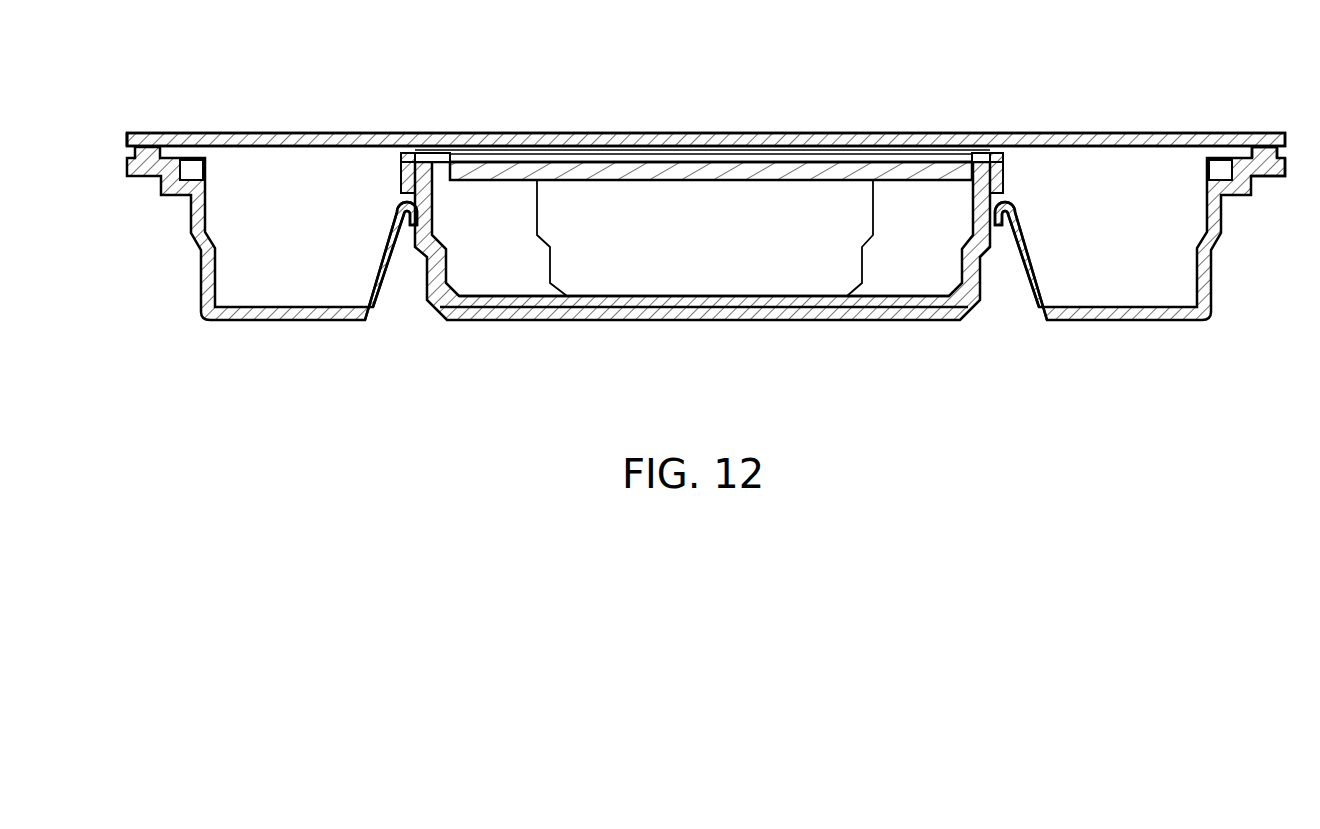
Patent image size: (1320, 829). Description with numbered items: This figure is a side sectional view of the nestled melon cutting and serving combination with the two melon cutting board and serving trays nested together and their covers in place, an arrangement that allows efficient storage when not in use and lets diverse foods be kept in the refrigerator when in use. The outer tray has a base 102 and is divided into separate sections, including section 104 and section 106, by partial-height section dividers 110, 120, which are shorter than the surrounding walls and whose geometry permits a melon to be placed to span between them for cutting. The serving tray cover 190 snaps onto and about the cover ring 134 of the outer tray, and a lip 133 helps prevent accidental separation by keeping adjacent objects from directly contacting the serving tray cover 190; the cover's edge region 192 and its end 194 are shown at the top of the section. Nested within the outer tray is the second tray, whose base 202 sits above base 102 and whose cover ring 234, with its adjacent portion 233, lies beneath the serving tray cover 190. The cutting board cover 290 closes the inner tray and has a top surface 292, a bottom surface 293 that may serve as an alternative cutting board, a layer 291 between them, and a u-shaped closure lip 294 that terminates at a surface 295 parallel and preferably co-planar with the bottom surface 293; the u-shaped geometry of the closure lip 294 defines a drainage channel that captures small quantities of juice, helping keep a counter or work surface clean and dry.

The base 102 is at (792, 322).
The section 104 is at (1135, 243).
The section 106 is at (317, 243).
The section divider 110 is at (1022, 273).
The section divider 120 is at (388, 278).
The lip 133 is at (1279, 174).
The cover ring 134 is at (1267, 147).
The serving tray cover 190 is at (591, 116).
The top plate 192 is at (307, 137).
The plate left edge 194 is at (160, 87).
The base 202 is at (627, 294).
The right bracket foot 233 is at (1007, 188).
The cover ring 234 is at (990, 160).
The cutting board cover 290 is at (733, 174).
The membrane film 291 is at (755, 160).
The top surface 292 is at (943, 160).
The bottom surface 293 is at (704, 239).
The u-shaped closure lip 294 is at (407, 163).
The surface 295 is at (400, 188).